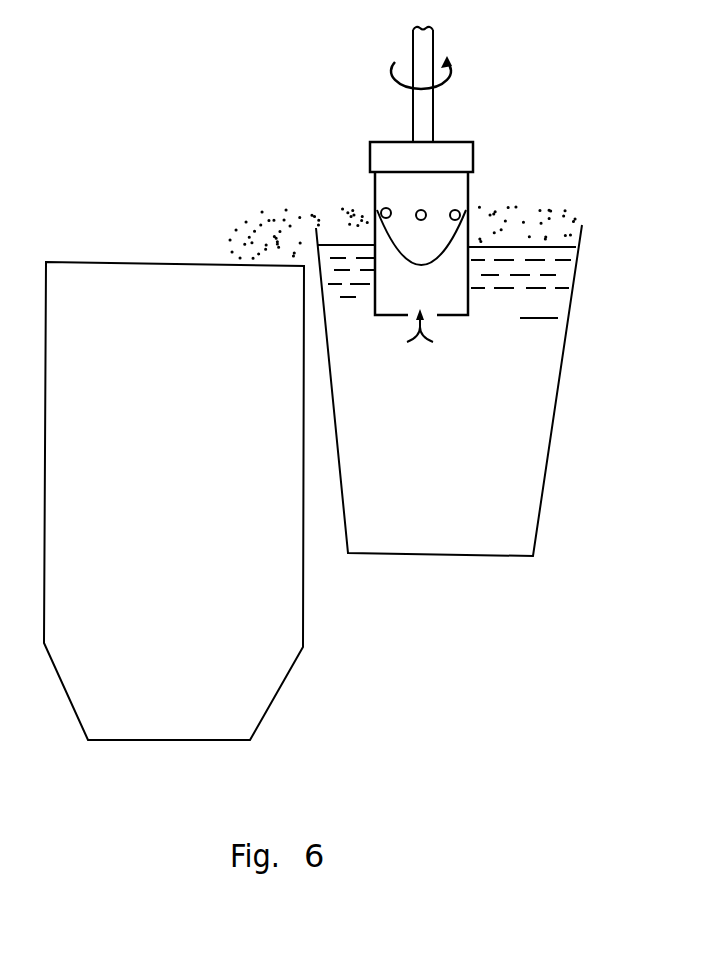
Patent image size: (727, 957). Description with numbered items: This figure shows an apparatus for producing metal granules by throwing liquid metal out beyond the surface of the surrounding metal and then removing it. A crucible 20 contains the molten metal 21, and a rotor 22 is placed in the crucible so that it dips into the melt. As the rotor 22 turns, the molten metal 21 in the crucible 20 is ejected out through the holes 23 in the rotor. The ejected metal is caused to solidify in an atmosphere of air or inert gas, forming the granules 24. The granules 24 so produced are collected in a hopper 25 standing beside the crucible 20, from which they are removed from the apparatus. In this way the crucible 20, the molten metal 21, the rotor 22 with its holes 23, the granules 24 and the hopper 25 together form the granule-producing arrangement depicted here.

The crucible 20 is at (561, 367).
The molten metal 21 is at (520, 318).
The rotor 22 is at (468, 199).
The holes 23 is at (378, 208).
The granules 24 is at (297, 218).
The hopper 25 is at (162, 280).